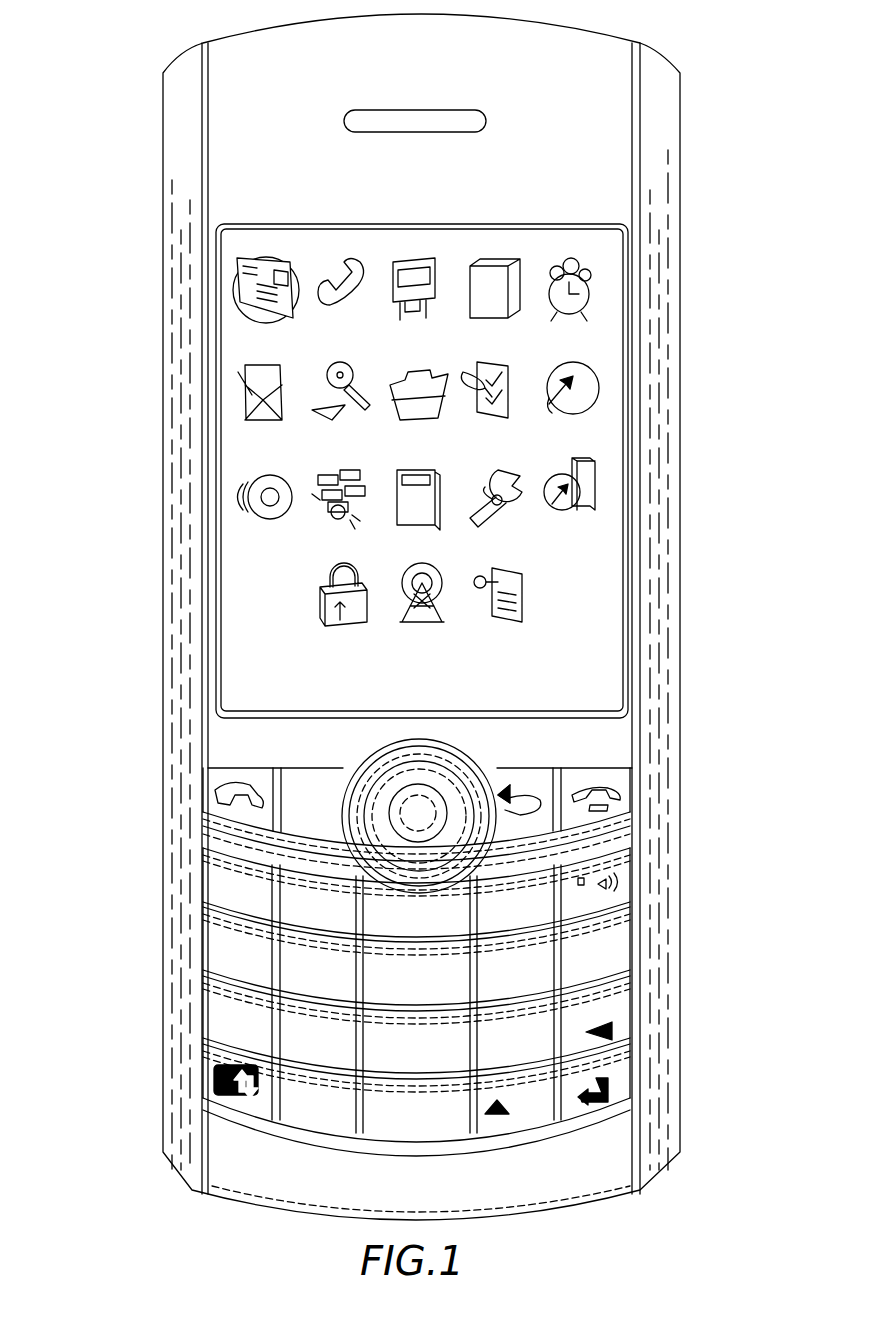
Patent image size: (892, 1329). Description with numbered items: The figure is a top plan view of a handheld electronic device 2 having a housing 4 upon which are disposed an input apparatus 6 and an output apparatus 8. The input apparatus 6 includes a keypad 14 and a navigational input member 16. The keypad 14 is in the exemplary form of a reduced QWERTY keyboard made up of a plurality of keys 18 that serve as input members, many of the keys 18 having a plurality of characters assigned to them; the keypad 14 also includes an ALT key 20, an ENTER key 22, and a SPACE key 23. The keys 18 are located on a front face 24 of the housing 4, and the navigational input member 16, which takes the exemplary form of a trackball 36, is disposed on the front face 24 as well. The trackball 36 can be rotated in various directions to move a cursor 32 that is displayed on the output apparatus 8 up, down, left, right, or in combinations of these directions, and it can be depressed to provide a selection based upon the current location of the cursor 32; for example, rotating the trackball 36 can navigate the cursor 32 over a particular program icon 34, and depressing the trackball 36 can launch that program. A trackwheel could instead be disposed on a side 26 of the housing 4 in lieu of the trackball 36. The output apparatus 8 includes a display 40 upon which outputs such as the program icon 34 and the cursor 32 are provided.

The handheld electronic device 2 is at (710, 74).
The housing 4 is at (673, 864).
The input apparatus 6 is at (347, 767).
The output apparatus 8 is at (594, 556).
The keypad 14 is at (640, 942).
The navigational input member 16 is at (428, 790).
The keys 18 is at (210, 1004).
The ALT key 20 is at (210, 1104).
The ENTER key 22 is at (630, 1052).
The SPACE key 23 is at (460, 1137).
The front face 24 is at (618, 745).
The side 26 is at (680, 298).
The cursor 32 is at (284, 258).
The program icon 34 is at (265, 315).
The trackball 36 is at (402, 792).
The display 40 is at (486, 460).